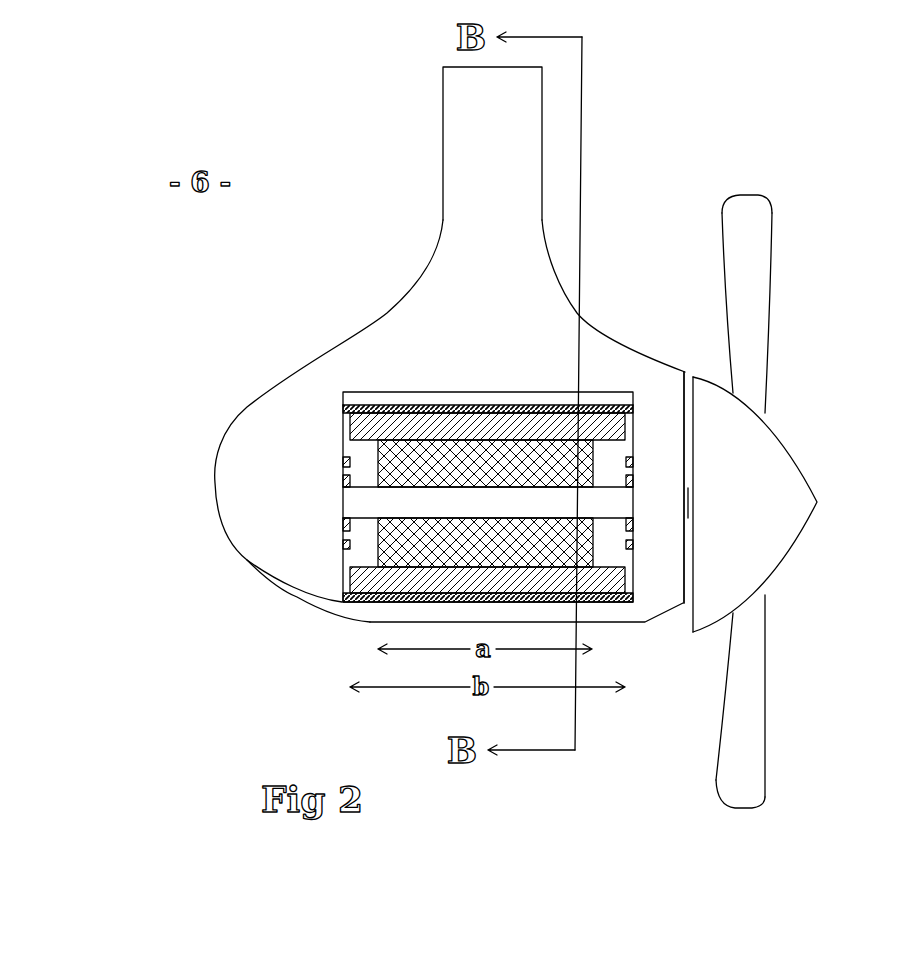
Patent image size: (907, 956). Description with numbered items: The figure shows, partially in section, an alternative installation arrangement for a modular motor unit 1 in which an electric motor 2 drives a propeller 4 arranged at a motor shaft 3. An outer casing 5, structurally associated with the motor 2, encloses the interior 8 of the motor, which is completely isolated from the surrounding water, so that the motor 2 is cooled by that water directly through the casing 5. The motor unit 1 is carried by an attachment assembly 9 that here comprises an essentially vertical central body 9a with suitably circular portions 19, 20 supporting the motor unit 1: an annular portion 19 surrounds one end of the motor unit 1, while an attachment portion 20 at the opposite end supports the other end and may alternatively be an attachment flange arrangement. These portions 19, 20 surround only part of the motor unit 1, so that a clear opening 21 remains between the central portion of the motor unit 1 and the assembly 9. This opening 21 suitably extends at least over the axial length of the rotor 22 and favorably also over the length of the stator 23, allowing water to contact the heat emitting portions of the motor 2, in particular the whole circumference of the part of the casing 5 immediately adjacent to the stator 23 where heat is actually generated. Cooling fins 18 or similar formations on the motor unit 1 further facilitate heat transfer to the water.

The modular motor unit 1 is at (608, 154).
The electric motor 2 is at (418, 388).
The motor shaft 3 is at (369, 498).
The propeller 4 is at (752, 227).
The outer casing 5 is at (395, 410).
The interior of the motor 8 is at (608, 465).
The attachment assembly 9 is at (228, 376).
The central body 9a is at (477, 170).
The cooling fins 18 is at (328, 608).
The annular portion 19 is at (658, 580).
The attachment portion 20 is at (327, 572).
The clear opening 21 is at (615, 398).
The rotor 22 is at (385, 545).
The stator 23 is at (373, 590).